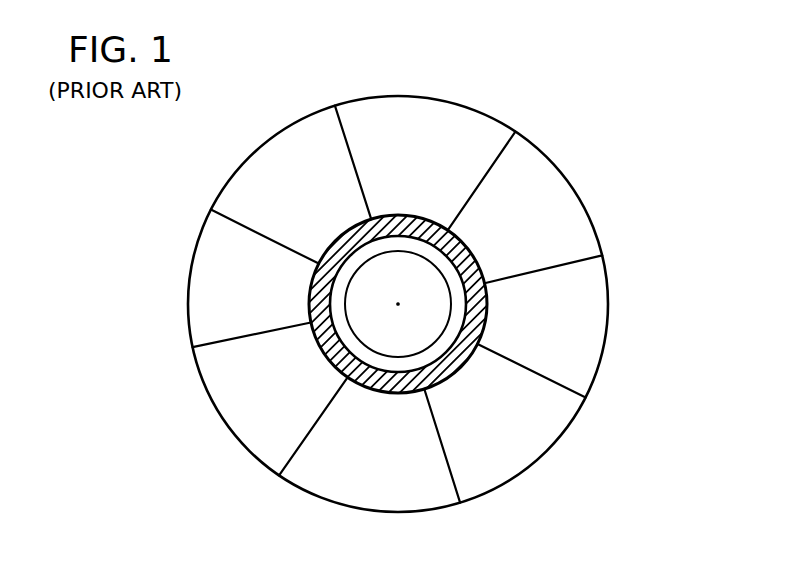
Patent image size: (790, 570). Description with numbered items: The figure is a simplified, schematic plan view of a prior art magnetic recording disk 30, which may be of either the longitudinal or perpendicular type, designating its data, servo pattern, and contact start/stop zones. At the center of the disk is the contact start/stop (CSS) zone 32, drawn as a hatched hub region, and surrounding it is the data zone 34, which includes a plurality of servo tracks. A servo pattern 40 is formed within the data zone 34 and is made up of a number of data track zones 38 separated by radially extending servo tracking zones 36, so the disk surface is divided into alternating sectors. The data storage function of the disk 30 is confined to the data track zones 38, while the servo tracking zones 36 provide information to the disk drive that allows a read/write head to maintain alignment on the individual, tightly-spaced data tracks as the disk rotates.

The magnetic recording disk 30 is at (593, 135).
The contact start/stop zone 32 is at (485, 318).
The data zone 34 is at (525, 415).
The servo tracking zones 36 is at (353, 170).
The data track zones 38 is at (328, 142).
The servo pattern 40 is at (252, 292).